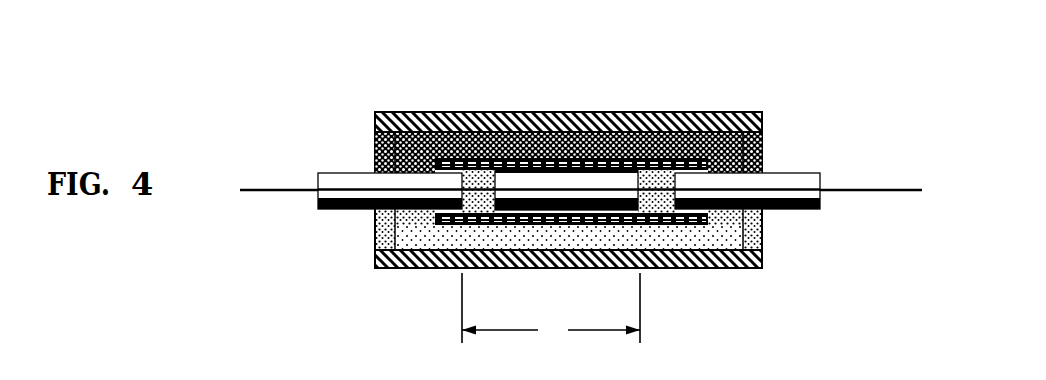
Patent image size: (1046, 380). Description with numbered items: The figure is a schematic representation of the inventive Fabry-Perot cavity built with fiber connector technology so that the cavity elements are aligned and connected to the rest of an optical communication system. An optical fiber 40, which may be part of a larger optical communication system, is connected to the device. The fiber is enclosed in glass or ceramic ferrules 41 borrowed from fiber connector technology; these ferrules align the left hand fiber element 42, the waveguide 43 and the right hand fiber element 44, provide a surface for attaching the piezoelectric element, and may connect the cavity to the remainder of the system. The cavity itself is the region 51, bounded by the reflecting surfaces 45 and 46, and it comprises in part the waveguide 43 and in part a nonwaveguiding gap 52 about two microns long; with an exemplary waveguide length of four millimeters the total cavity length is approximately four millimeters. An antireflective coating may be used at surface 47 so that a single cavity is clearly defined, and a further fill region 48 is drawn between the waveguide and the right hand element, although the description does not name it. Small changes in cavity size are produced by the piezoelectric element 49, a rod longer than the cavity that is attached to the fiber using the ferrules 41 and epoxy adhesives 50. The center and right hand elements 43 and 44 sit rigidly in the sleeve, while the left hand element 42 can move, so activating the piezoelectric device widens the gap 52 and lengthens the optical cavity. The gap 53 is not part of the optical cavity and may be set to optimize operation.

The optical fiber 40 is at (253, 187).
The ferrules 41 is at (330, 194).
The left hand fiber element 42 is at (337, 175).
The waveguide 43 is at (580, 172).
The right hand fiber element 44 is at (797, 176).
The reflecting surface 45 is at (468, 158).
The reflecting surface 46 is at (645, 168).
The surface 47 is at (480, 213).
The second fill material 48 is at (673, 215).
The piezoelectric element 49 is at (392, 269).
The epoxy adhesives 50 is at (385, 232).
The cavity region 51 is at (551, 309).
The nonwaveguiding gap 52 is at (509, 136).
The gap 53 is at (717, 136).